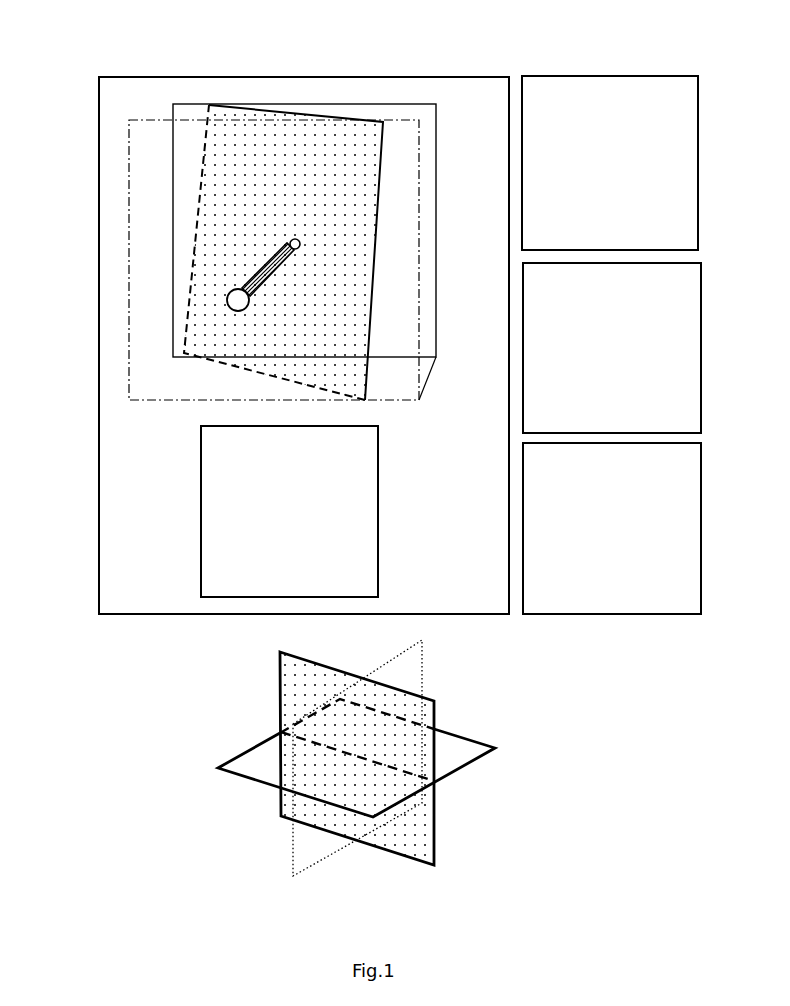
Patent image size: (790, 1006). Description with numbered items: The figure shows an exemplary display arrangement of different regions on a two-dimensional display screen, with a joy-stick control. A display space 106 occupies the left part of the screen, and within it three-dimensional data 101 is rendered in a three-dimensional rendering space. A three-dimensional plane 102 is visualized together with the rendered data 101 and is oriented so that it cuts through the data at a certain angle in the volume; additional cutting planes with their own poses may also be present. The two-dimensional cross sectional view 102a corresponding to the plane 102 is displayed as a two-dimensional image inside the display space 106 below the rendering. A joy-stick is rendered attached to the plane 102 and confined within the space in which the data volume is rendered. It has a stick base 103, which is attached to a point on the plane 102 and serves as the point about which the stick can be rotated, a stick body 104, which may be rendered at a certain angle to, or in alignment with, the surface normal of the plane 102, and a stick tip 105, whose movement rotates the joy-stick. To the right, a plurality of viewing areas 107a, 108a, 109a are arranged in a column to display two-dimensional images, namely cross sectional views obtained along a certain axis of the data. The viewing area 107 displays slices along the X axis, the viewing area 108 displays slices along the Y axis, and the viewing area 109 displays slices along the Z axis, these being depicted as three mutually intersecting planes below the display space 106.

The 3D data 101 is at (395, 103).
The 3D plane 102 is at (350, 340).
The 2D cross sectional view 102a is at (357, 517).
The stick base 103 is at (292, 244).
The stick body 104 is at (258, 272).
The stick tip 105 is at (238, 300).
The display space 106 is at (122, 90).
The viewing area 107 is at (412, 665).
The viewing area 107a is at (563, 230).
The viewing area 108 is at (423, 717).
The viewing area 108a is at (605, 423).
The viewing area 109 is at (468, 755).
The viewing area 109a is at (662, 597).